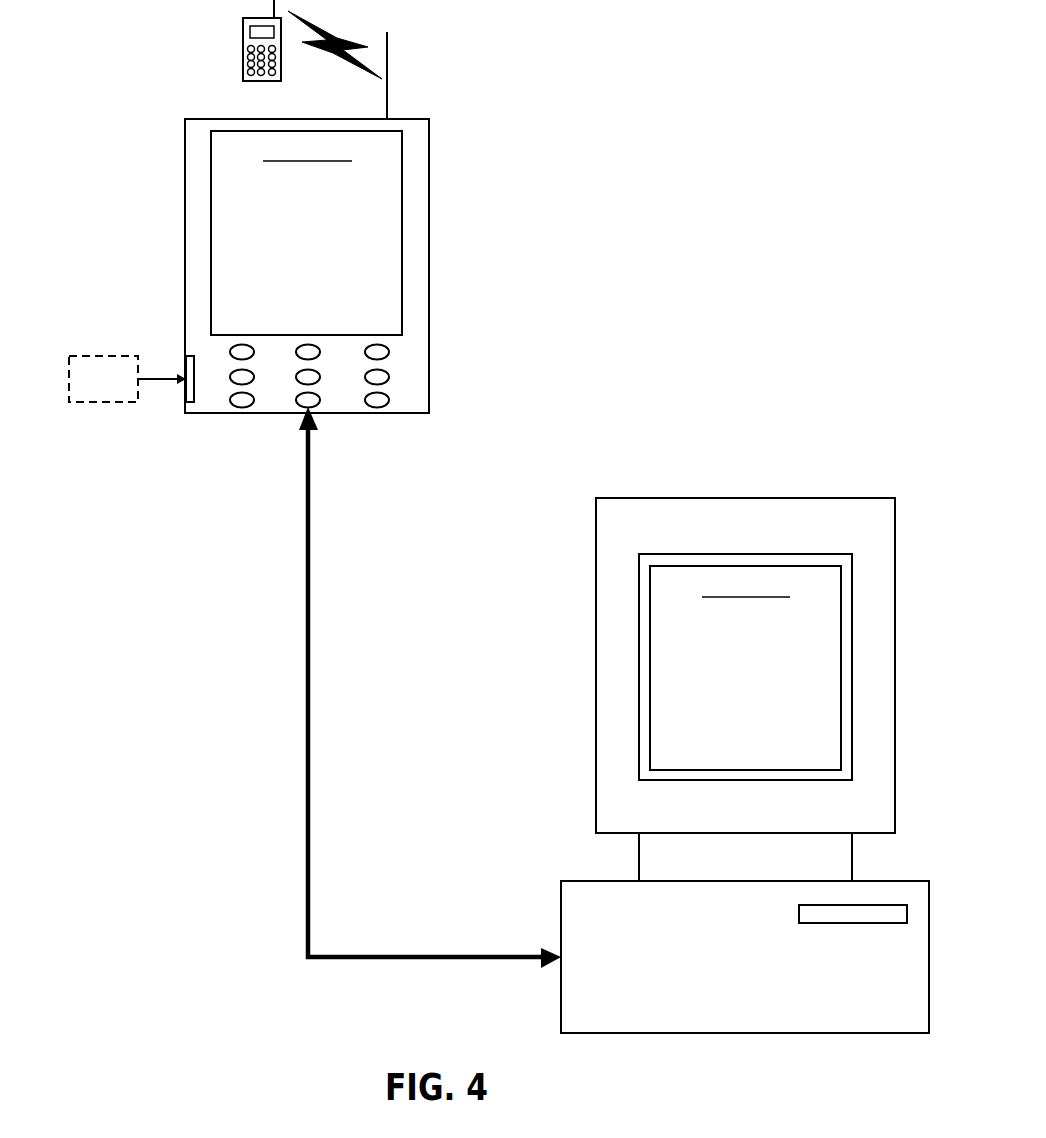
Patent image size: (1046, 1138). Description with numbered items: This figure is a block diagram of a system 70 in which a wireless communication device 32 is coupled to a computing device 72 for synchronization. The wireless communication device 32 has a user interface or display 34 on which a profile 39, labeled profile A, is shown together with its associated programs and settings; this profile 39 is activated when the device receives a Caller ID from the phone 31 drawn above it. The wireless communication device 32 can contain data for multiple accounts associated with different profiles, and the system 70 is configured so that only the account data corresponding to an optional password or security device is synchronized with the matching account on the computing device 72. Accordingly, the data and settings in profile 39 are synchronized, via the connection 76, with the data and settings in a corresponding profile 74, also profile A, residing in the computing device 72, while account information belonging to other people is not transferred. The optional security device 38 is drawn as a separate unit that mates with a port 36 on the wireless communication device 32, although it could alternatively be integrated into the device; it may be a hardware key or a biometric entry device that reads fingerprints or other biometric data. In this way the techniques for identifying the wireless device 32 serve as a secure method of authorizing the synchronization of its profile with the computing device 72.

The phone 31 is at (243, 52).
The wireless communication device 32 is at (185, 190).
The user interface or display 34 is at (207, 143).
The port 36 is at (186, 356).
The security device 38 is at (102, 402).
The profile A 39 is at (370, 148).
The system 70 is at (568, 1104).
The computing device 72 is at (623, 497).
The profile A in the computing device 74 is at (727, 573).
The connection 76 is at (310, 608).